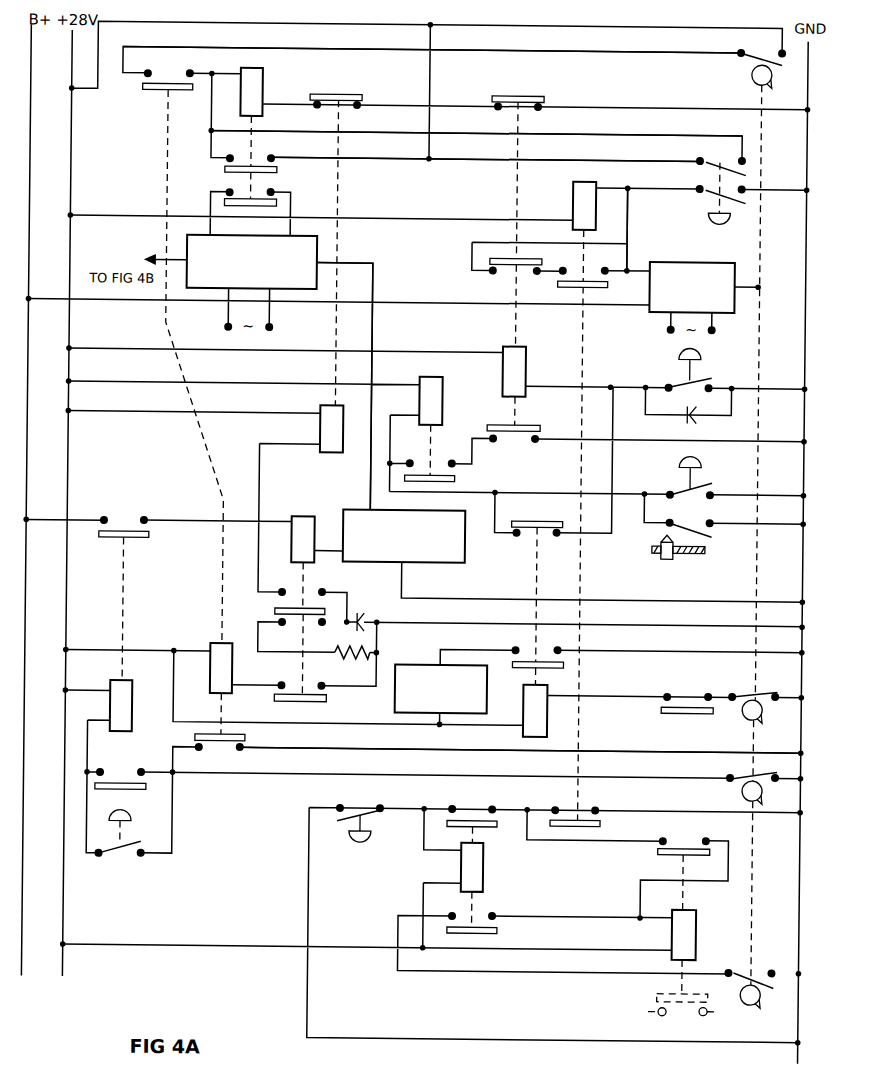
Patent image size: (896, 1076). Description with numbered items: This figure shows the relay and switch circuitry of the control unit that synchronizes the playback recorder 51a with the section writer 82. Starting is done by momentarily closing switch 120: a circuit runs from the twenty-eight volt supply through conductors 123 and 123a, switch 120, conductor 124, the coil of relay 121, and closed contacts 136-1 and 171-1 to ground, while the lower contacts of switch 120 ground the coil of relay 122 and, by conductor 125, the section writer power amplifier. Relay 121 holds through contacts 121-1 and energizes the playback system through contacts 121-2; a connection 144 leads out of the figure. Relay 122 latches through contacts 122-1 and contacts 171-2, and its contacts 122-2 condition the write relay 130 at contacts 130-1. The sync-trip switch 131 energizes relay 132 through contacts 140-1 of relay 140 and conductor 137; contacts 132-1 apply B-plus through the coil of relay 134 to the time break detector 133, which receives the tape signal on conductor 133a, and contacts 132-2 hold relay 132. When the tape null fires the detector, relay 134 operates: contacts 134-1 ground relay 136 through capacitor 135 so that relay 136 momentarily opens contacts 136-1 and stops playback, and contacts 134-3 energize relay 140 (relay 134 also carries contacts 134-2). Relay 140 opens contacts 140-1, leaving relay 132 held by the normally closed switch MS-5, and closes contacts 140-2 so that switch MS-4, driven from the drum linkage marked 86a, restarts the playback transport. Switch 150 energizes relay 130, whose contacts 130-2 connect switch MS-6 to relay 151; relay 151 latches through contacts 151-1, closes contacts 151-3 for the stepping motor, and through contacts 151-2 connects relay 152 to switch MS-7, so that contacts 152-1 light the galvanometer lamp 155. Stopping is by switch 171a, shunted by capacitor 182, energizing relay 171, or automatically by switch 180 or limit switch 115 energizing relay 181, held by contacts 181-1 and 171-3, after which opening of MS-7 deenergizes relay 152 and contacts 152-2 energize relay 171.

The relay contacts 140-2 is at (142, 83).
The relay 121 is at (261, 89).
The conductor 123 is at (305, 27).
The relay contacts 136-1 is at (357, 94).
The relay contacts 171-1 is at (536, 95).
The switch MS-4 is at (747, 62).
The conductor 124 is at (493, 134).
The conductor 123a is at (499, 160).
The switch 120 is at (708, 164).
The relay 122 is at (568, 204).
The conductor 125 is at (625, 231).
The relay contacts 121-1 is at (269, 162).
The relay contacts 121-2 is at (273, 195).
The connection to FIG 4B 144 is at (160, 260).
The playback recorder 51a is at (287, 292).
The conductor 133a is at (380, 278).
The relay contacts 171-2 is at (504, 274).
The relay contacts 122-1 is at (587, 276).
The section writer 82 is at (663, 316).
The relay 171 is at (501, 345).
The switch 171a is at (678, 376).
The conductor 86a is at (758, 359).
The capacitor 182 is at (697, 418).
The relay 181 is at (442, 412).
The relay 136 is at (318, 421).
The relay contacts 171-3 is at (518, 446).
The relay contacts 181-1 is at (454, 472).
The switch 180 is at (692, 494).
The limit switch 115 is at (705, 542).
The relay contacts 132-1 is at (122, 522).
The relay 134 is at (311, 505).
The time break detector 133 is at (430, 565).
The relay contacts 152-2 is at (530, 544).
The relay contacts 134-1 is at (306, 602).
The capacitor 135 is at (369, 619).
The relay 134 contact 134-2 is at (309, 626).
The relay contacts 152-1 is at (539, 659).
The relay 132 is at (136, 696).
The relay 140 is at (240, 689).
The relay contacts 151-2 is at (684, 690).
The switch MS-7 is at (770, 688).
The relay contacts 134-3 is at (282, 697).
The galvanometer lamp 155 is at (397, 690).
The relay 152 is at (525, 736).
The relay contacts 140-1 is at (249, 744).
The conductor 137 is at (420, 750).
The relay contacts 132-2 is at (124, 773).
The switch MS-5 is at (751, 777).
The relay contacts 130-1 is at (475, 815).
The relay contacts 122-2 is at (601, 824).
The sync-trip switch 131 is at (128, 841).
The switch 150 is at (372, 828).
The write relay 130 is at (488, 847).
The relay contacts 151-1 is at (663, 846).
The relay contacts 130-2 is at (504, 930).
The relay 151 is at (701, 932).
The relay contacts 151-3 is at (660, 1000).
The switch MS-6 is at (765, 1002).